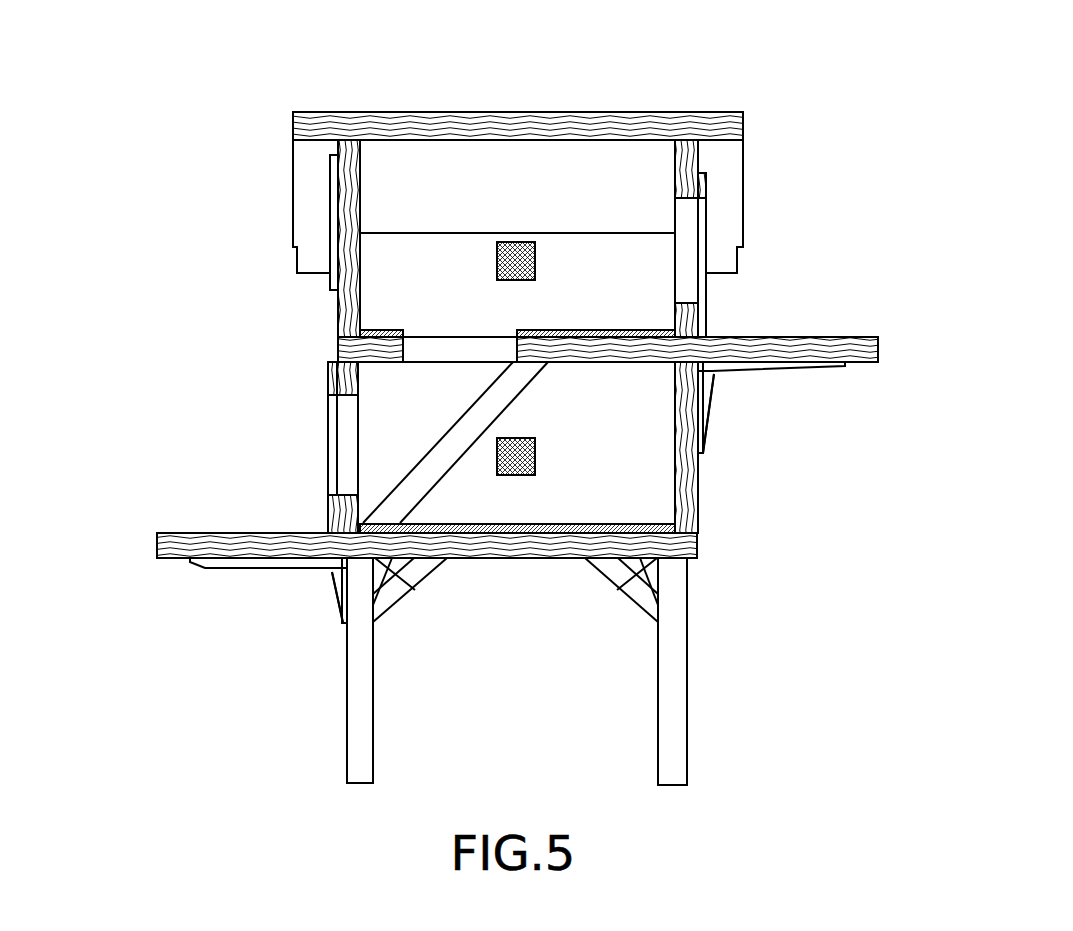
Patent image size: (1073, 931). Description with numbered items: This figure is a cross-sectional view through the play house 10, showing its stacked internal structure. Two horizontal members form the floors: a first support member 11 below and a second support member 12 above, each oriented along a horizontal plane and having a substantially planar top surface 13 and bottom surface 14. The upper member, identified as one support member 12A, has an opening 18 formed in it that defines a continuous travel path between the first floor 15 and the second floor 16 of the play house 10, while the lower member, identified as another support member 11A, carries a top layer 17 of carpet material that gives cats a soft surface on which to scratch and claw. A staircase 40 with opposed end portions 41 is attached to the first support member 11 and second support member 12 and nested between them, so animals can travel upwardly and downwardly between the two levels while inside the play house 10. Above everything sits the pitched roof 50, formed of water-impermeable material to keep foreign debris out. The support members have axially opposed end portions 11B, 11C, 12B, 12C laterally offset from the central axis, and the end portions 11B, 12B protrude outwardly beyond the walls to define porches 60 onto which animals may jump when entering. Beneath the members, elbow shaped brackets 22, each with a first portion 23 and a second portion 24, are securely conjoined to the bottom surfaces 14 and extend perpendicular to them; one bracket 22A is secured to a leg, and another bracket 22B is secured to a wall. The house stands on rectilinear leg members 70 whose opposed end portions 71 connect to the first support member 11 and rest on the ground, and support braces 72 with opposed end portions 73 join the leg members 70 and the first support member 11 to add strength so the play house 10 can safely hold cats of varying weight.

The play house 10 is at (905, 112).
The first support member 11 is at (700, 548).
The another of the support members 11A is at (530, 560).
The end portion of first support member 11B is at (157, 545).
The end portion of first support member 11C is at (705, 560).
The second support member 12 is at (338, 360).
The one of the support members 12A is at (595, 362).
The end portion of second support member 12B is at (880, 350).
The end portion of second support member 12C is at (338, 345).
The top surface 13 is at (700, 337).
The bottom surface 14 is at (657, 362).
The first floor 15 is at (320, 505).
The second floor 16 is at (330, 312).
The top layer 17 is at (610, 524).
The opening 18 is at (440, 345).
The elbow shaped bracket 22 is at (714, 376).
The one of the elbow shaped brackets 22A is at (330, 590).
The another of the elbow shaped brackets 22B is at (712, 392).
The first portion of elbow shaped bracket 23 is at (860, 364).
The second portion of elbow shaped bracket 24 is at (702, 450).
The staircase 40 is at (450, 475).
The end portions of staircase 41 is at (560, 340).
The pitched roof 50 is at (522, 112).
The porch 60 is at (830, 338).
The rectilinear leg member 70 is at (347, 740).
The end portions of leg member 71 is at (347, 783).
The support brace 72 is at (650, 612).
The end portions of support brace 73 is at (345, 615).